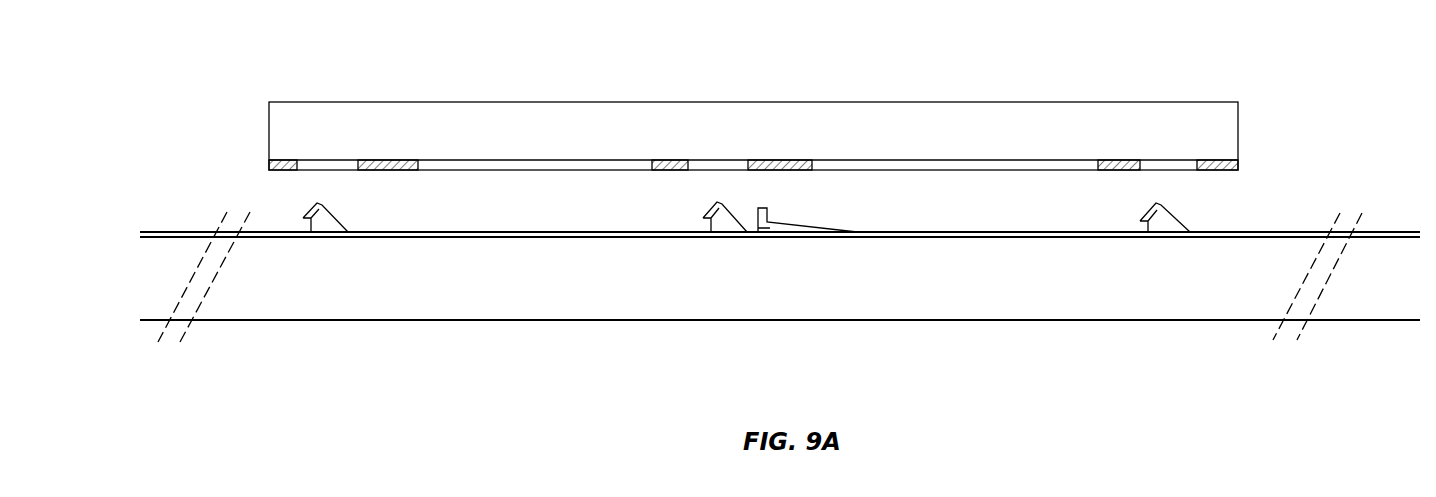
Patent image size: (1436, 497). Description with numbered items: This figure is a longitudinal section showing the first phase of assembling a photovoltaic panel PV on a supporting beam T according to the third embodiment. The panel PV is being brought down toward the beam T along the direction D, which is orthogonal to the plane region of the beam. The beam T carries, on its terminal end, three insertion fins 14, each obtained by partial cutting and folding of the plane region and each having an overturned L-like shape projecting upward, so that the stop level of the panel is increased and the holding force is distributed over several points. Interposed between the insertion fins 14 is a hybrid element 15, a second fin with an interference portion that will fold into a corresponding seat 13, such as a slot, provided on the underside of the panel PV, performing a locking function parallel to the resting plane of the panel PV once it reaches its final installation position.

The seat 13 is at (717, 160).
The insertion fin 14 is at (338, 213).
The hybrid element 15 is at (805, 215).
The photovoltaic panel PV is at (1253, 97).
The supporting beam T is at (147, 213).
The direction of approach D is at (255, 170).